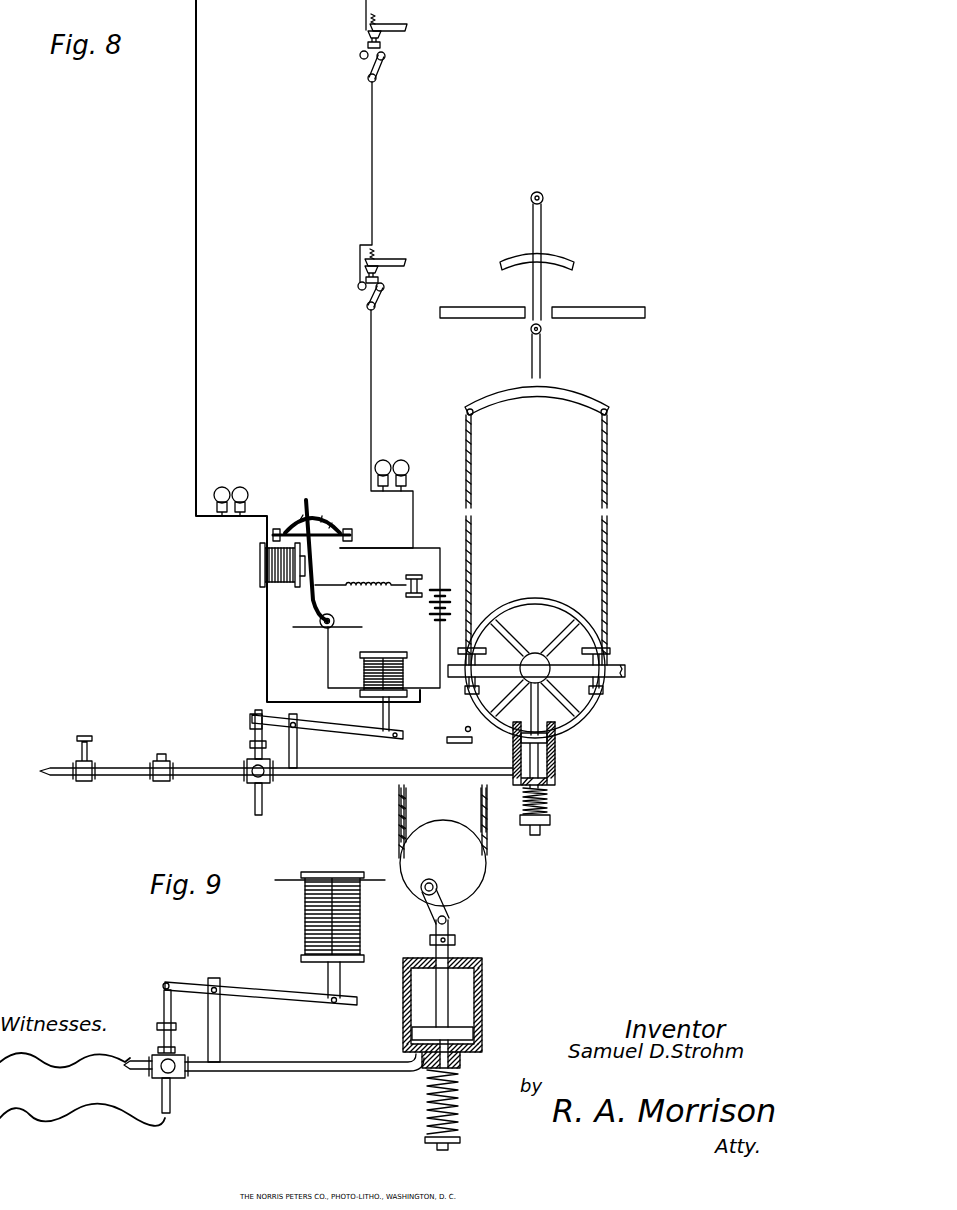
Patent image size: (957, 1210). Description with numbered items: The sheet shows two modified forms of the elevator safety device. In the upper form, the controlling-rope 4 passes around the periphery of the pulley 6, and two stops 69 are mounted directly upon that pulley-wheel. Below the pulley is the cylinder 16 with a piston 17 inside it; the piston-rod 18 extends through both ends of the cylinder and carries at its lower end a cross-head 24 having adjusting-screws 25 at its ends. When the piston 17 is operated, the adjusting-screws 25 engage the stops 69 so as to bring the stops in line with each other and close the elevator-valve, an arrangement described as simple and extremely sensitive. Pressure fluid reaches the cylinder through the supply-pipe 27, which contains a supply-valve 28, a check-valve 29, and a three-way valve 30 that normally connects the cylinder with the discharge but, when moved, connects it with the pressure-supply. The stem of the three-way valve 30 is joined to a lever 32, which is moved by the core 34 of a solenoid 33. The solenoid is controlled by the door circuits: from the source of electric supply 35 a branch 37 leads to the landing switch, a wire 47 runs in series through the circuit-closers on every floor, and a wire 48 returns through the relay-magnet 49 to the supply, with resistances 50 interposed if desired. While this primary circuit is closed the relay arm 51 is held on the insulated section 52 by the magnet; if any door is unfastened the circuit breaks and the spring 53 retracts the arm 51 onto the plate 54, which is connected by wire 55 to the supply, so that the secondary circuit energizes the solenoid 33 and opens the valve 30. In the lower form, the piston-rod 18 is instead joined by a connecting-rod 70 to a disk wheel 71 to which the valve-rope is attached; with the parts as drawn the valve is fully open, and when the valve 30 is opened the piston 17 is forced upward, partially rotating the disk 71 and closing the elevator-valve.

In FIG. 8, the controlling-rope 4 is at (523, 517).
In FIG. 8, the pulley 6 is at (535, 662).
In FIG. 8, the cylinder 16 is at (553, 757).
In FIG. 8, the piston 17 is at (514, 751).
In FIG. 9, the piston 17 is at (484, 1031).
In FIG. 8, the piston-rod 18 is at (539, 708).
In FIG. 9, the piston-rod 18 is at (452, 986).
In FIG. 8, the cross-head 24 is at (527, 660).
In FIG. 8, the adjusting-screws 25 is at (480, 688).
In FIG. 8, the supply-pipe 27 is at (355, 778).
In FIG. 9, the supply-pipe 27 is at (274, 1074).
In FIG. 8, the supply-valve 28 is at (95, 758).
In FIG. 8, the check-valve 29 is at (164, 759).
In FIG. 8, the three-way valve 30 is at (266, 762).
In FIG. 9, the three-way valve 30 is at (176, 1056).
In FIG. 8, the lever 32 is at (361, 741).
In FIG. 9, the lever 32 is at (260, 1020).
In FIG. 8, the solenoid 33 is at (383, 665).
In FIG. 9, the solenoid 33 is at (330, 935).
In FIG. 8, the core 34 is at (390, 712).
In FIG. 8, the source of electric supply 35 is at (430, 609).
In FIG. 8, the branch 37 is at (376, 429).
In FIG. 8, the wire 47 is at (382, 155).
In FIG. 8, the wire 48 is at (308, 351).
In FIG. 8, the relay-magnet 49 is at (261, 568).
In FIG. 8, the resistances 50 is at (311, 477).
In FIG. 8, the arm of the relay 51 is at (312, 590).
In FIG. 8, the insulated section 52 is at (312, 520).
In FIG. 8, the spring 53 is at (368, 590).
In FIG. 8, the plate 54 is at (333, 525).
In FIG. 8, the wire 55 is at (384, 609).
In FIG. 8, the stops 69 is at (484, 650).
In FIG. 9, the connecting-rod 70 is at (432, 906).
In FIG. 9, the disk wheel 71 is at (443, 845).